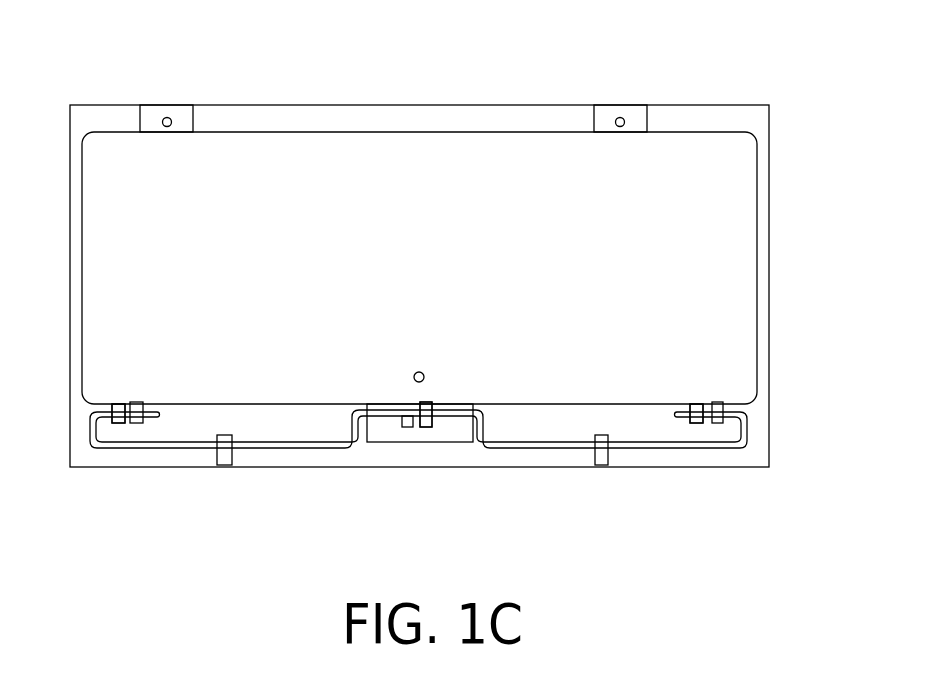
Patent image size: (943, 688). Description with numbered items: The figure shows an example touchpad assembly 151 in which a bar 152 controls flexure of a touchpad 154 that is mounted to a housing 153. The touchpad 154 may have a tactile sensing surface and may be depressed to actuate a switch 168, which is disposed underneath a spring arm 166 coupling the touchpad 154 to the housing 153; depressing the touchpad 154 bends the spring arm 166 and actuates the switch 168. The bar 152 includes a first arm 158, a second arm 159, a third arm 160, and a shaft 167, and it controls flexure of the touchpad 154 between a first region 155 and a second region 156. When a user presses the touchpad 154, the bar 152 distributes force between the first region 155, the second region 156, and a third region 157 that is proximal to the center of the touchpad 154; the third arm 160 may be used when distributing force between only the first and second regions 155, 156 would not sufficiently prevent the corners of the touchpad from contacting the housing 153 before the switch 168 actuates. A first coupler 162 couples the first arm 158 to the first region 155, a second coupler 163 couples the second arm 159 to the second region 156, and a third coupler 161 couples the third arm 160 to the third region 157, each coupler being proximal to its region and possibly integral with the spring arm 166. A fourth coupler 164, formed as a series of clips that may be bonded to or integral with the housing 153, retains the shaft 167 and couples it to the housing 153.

The touchpad assembly 151 is at (432, 76).
The bar 152 is at (290, 450).
The housing 153 is at (172, 468).
The touchpad 154 is at (437, 278).
The first region 155 is at (716, 373).
The second region 156 is at (143, 359).
The third region 157 is at (401, 388).
The first arm 158 is at (747, 426).
The second arm 159 is at (90, 429).
The third arm 160 is at (352, 426).
The third coupler 161 is at (432, 402).
The first coupler 162 is at (698, 404).
The second coupler 163 is at (133, 404).
The fourth coupler 164 is at (224, 463).
The spring arm 166 is at (432, 443).
The shaft 167 is at (140, 448).
The switch 168 is at (421, 372).